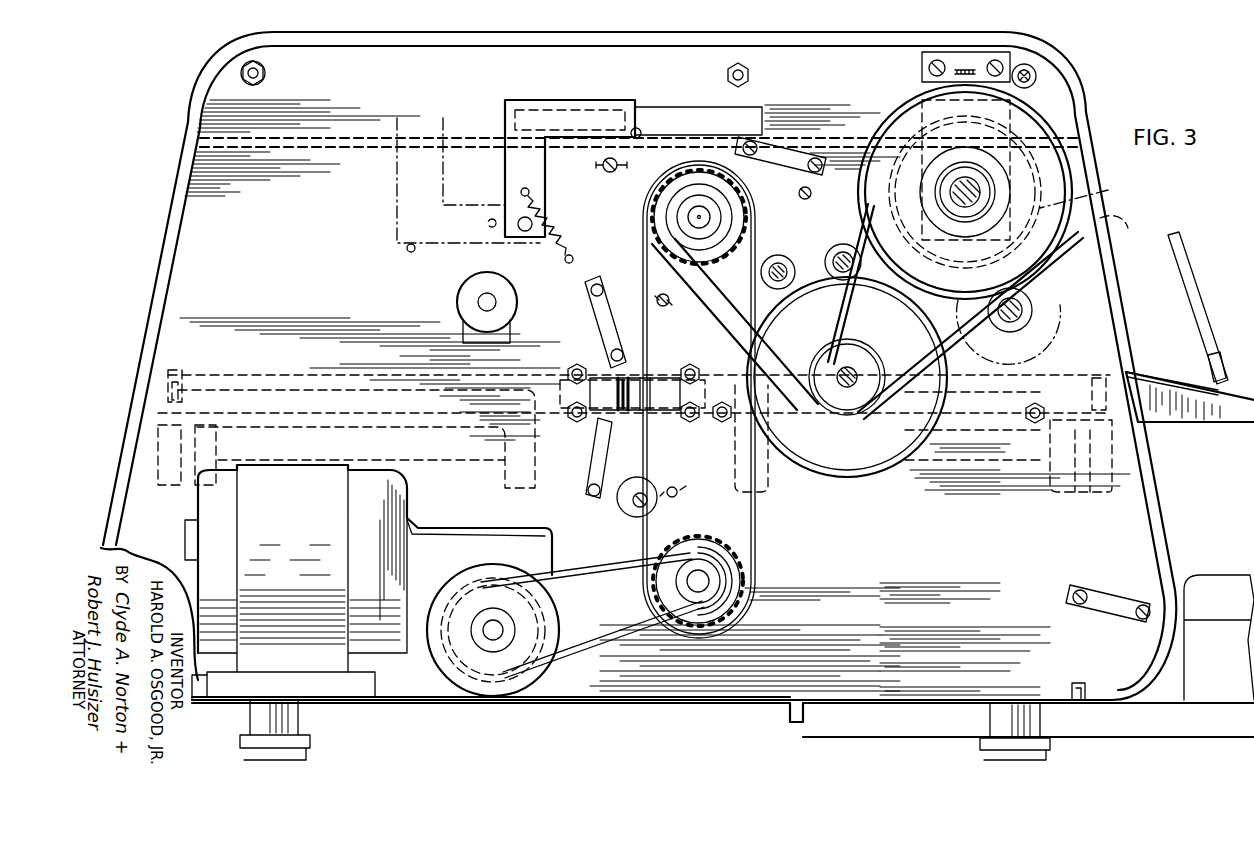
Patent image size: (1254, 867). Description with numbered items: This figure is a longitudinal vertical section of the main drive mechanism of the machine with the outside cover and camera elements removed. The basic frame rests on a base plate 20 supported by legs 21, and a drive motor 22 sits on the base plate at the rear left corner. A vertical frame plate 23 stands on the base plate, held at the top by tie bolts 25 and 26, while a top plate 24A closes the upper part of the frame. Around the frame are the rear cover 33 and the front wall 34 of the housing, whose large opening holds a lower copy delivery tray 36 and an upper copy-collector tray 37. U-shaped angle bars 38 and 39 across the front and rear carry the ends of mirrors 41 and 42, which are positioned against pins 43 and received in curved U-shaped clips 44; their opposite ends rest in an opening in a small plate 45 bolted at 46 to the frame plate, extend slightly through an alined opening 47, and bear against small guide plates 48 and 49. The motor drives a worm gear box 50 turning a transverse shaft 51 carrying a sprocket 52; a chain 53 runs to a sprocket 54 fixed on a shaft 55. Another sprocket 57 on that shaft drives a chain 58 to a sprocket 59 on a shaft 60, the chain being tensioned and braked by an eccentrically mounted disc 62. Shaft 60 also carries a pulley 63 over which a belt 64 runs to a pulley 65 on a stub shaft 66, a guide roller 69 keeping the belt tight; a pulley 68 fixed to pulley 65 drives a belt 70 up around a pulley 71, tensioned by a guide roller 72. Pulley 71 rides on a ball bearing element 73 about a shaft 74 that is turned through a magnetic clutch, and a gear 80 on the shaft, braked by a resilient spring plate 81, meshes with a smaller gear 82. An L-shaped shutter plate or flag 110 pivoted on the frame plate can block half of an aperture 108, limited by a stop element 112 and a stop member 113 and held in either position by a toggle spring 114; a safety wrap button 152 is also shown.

The base plate 20 is at (612, 706).
The legs 21 is at (304, 758).
The drive motor 22 is at (396, 655).
The frame plate 23 is at (847, 68).
The top plate 24A is at (355, 150).
The tie bolt 25 is at (750, 78).
The tie bolt 26 is at (1040, 74).
The rear cover 33 is at (148, 354).
The front wall 34 is at (1170, 508).
The lower copy delivery tray 36 is at (1210, 732).
The upper copy-collector tray 37 is at (1210, 424).
The U-shaped angle bar 38 is at (1083, 494).
The U-shaped angle bar 39 is at (165, 480).
The mirror 41 is at (240, 375).
The mirror 42 is at (1036, 380).
The pin 43 is at (182, 374).
The U-shaped clip 44 is at (166, 392).
The small plate 45 is at (588, 368).
The bolt 46 is at (687, 416).
The alined opening 47 is at (598, 412).
The guide plate 48 is at (612, 420).
The guide plate 49 is at (672, 420).
The worm gear box 50 is at (492, 540).
The transverse shaft 51 is at (506, 621).
The sprocket 52 is at (556, 630).
The chain 53 is at (575, 650).
The sprocket 54 is at (676, 573).
The shaft 55 is at (706, 581).
The sprocket 57 is at (708, 538).
The chain 58 is at (754, 522).
The sprocket 59 is at (718, 266).
The shaft 60 is at (688, 217).
The eccentrically mounted disc 62 is at (630, 506).
The pulley 63 is at (722, 230).
The belt 64 is at (712, 328).
The pulley 65 is at (860, 472).
The stub shaft 66 is at (856, 376).
The pulley 68 is at (852, 356).
The guide roller 69 is at (788, 262).
The belt 70 is at (960, 336).
The pulley 71 is at (1062, 232).
The guide roller 72 is at (838, 248).
The ball bearing element 73 is at (997, 200).
The shaft 74 is at (972, 210).
The gear 80 is at (1084, 192).
The resilient spring plate 81 is at (1120, 231).
The gear 82 is at (1052, 310).
The aperture 108 is at (674, 118).
The shutter plate or flag 110 is at (566, 114).
The stop element 112 is at (619, 165).
The stop member 113 is at (411, 252).
The spring 114 is at (566, 238).
The safety wrap button 152 is at (466, 300).